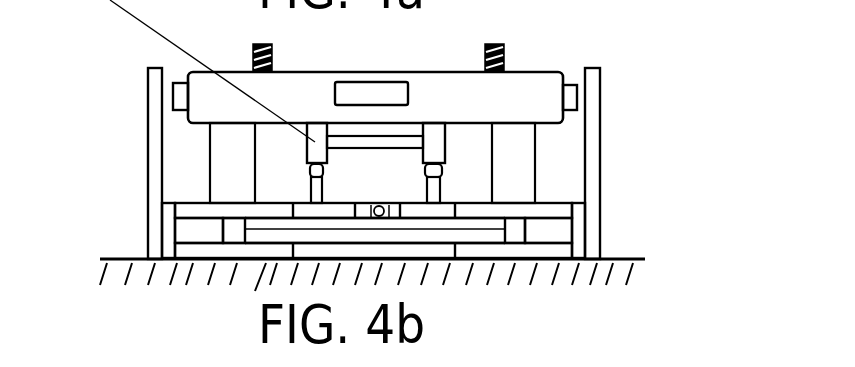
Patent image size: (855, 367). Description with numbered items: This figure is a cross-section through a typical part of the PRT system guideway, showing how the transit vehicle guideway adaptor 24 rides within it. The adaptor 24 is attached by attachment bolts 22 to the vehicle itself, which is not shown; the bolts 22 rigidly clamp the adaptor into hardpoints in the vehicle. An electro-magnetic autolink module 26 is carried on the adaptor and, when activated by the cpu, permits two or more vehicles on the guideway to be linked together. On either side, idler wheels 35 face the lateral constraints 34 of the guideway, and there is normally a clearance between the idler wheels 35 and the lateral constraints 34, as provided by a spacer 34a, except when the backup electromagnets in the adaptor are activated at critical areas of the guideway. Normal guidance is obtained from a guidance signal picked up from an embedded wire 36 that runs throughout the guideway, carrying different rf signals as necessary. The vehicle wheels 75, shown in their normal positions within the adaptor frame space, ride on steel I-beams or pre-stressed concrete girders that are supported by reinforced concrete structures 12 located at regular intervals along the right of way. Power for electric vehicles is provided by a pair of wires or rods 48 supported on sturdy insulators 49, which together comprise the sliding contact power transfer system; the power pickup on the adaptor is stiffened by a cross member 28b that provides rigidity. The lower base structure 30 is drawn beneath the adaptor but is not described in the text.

The reinforced concrete structures 12 is at (623, 260).
The attachment bolts 22 is at (278, 43).
The transit vehicle guideway adaptor 24 is at (188, 70).
The electro-magnetic autolink modules 26 is at (400, 88).
The cross member 28b is at (407, 143).
The base assembly 30 is at (207, 215).
The lateral constraints 34 is at (150, 105).
The spacer 34a is at (165, 235).
The idler wheels 35 is at (176, 97).
The embedded wire 36 is at (408, 203).
The wires or rods 48 is at (307, 168).
The insulators 49 is at (309, 194).
The vehicle wheels 75 is at (535, 150).